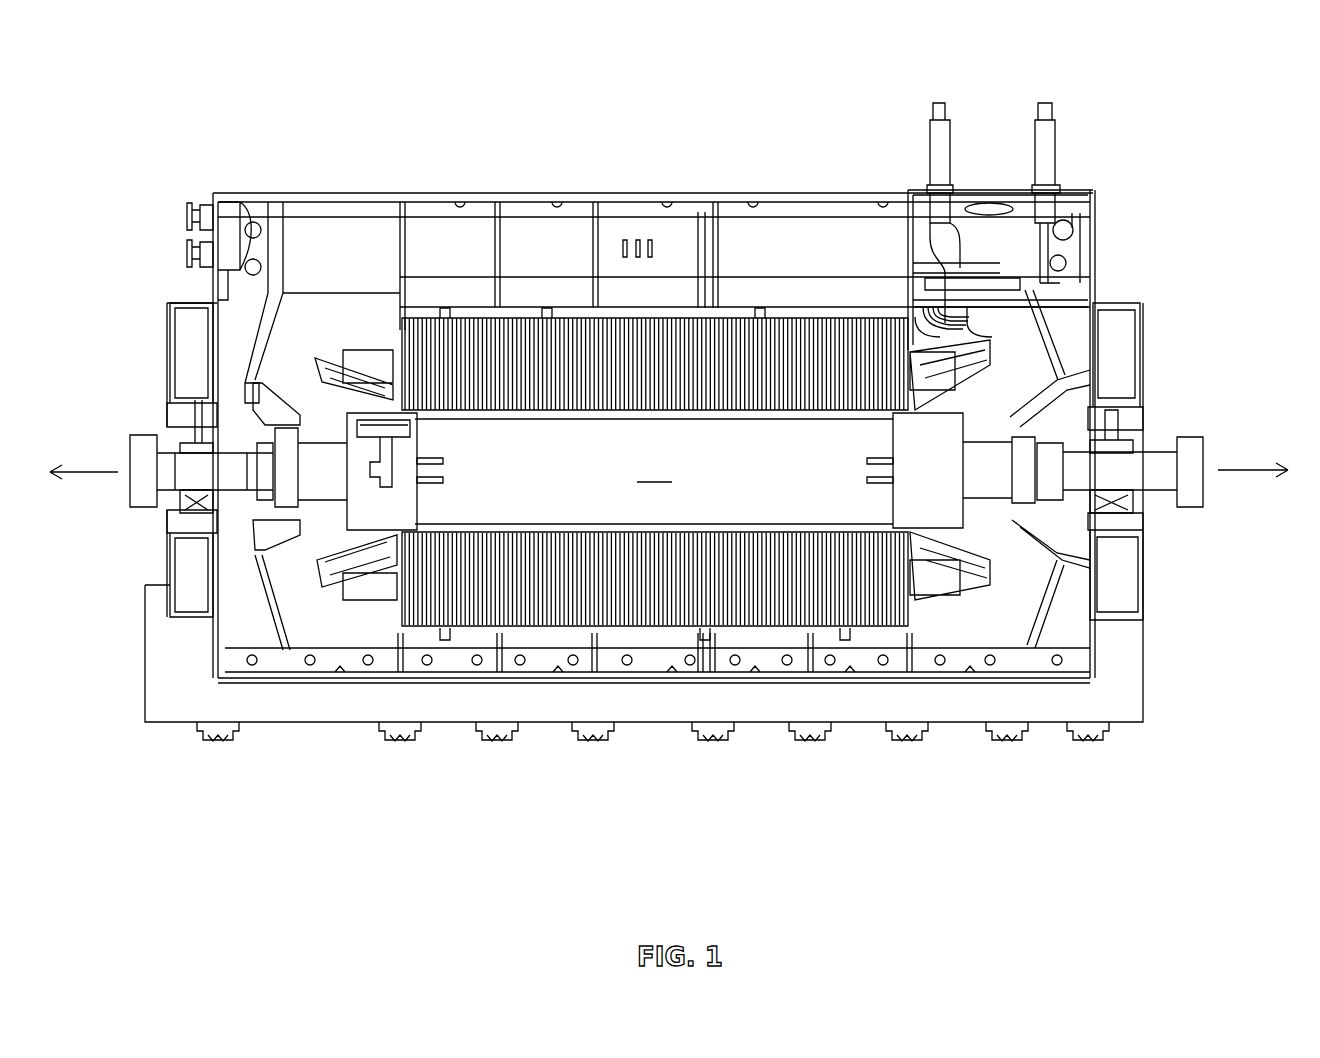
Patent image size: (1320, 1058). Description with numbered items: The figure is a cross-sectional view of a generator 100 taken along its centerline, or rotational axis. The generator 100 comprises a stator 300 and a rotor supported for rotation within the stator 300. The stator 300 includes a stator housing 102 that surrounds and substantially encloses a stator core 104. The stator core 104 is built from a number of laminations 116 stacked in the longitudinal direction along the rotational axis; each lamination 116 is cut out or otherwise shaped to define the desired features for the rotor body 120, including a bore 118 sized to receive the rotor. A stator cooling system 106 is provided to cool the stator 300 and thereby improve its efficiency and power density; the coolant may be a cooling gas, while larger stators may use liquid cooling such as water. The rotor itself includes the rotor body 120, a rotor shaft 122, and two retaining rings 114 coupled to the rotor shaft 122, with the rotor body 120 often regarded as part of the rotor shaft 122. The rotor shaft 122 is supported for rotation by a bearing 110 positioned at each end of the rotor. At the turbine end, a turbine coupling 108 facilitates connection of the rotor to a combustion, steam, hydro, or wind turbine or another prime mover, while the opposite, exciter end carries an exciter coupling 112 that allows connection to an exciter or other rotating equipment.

The generator 100 is at (1122, 108).
The stator housing 102 is at (703, 195).
The stator core 104 is at (488, 625).
The stator cooling system 106 is at (963, 337).
The turbine coupling 108 is at (1192, 517).
The bearing 110 is at (197, 498).
The exciter coupling 112 is at (145, 453).
The retaining ring 114 is at (390, 512).
The lamination 116 is at (730, 598).
The bore 118 is at (812, 410).
The rotor body 120 is at (585, 498).
The rotor shaft 122 is at (320, 483).
The stator 300 is at (472, 247).